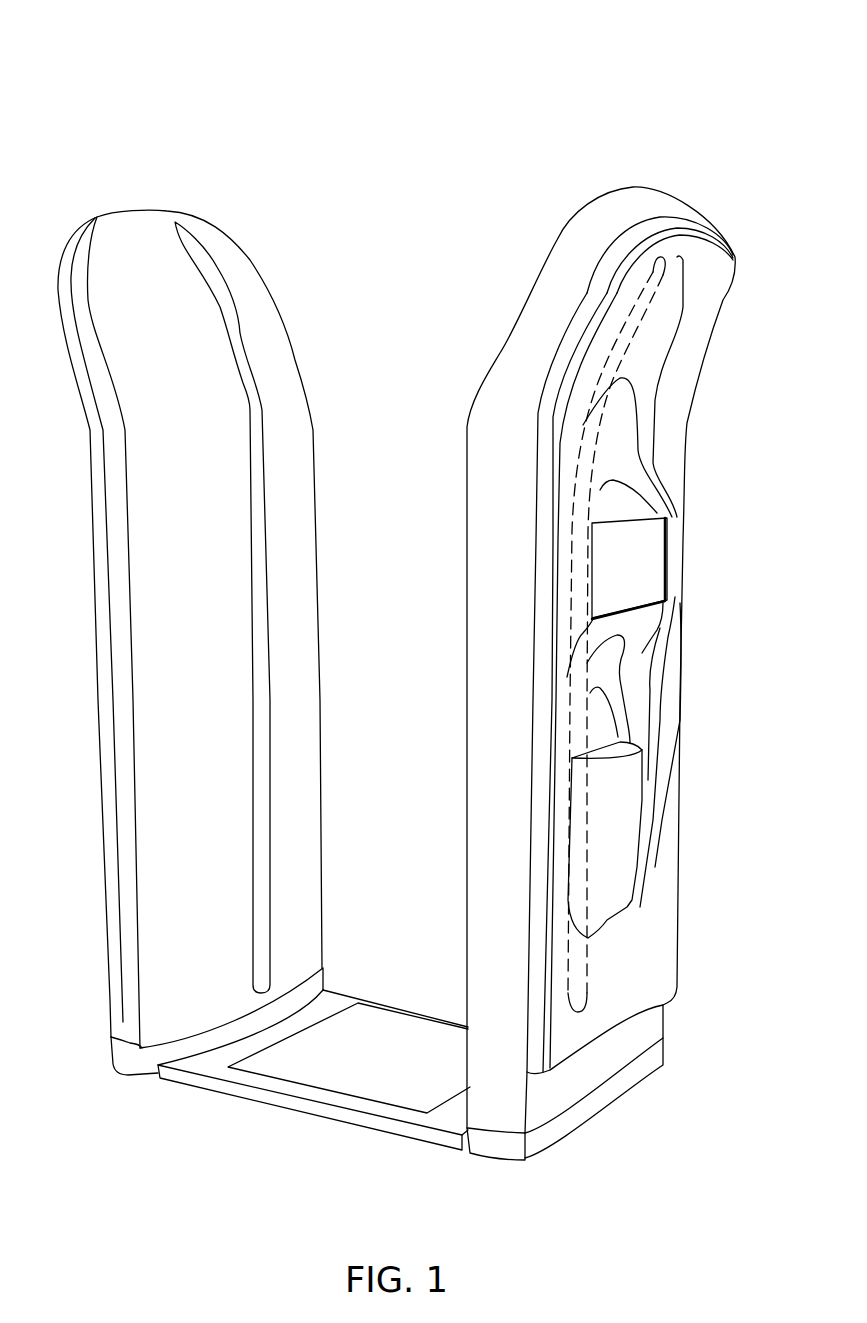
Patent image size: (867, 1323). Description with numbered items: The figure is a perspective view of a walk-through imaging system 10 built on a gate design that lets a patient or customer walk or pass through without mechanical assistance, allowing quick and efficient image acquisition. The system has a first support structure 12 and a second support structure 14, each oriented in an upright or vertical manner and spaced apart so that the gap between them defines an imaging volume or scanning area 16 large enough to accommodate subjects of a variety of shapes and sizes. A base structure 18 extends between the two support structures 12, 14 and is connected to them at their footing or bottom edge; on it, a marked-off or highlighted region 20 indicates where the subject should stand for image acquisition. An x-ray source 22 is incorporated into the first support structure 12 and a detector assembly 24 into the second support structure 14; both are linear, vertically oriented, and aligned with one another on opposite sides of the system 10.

The walk-through imaging system 10 is at (658, 58).
The first support structure 12 is at (126, 190).
The second support structure 14 is at (658, 168).
The imaging volume or scanning area 16 is at (410, 682).
The base structure 18 is at (277, 1098).
The marked-off or highlighted region 20 is at (415, 1023).
The x-ray source 22 is at (202, 257).
The detector assembly 24 is at (650, 283).